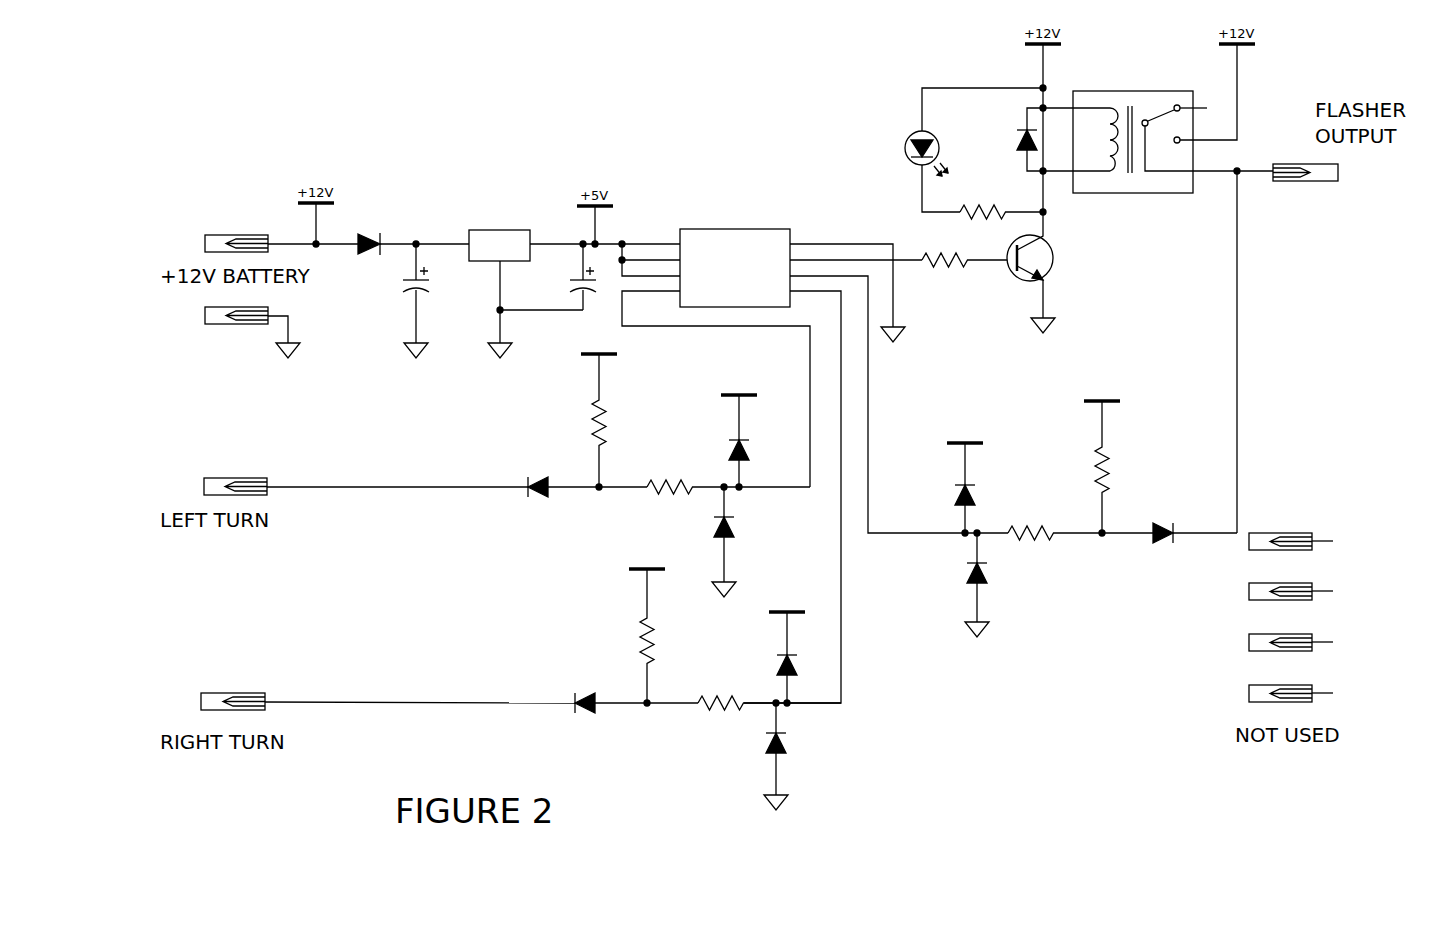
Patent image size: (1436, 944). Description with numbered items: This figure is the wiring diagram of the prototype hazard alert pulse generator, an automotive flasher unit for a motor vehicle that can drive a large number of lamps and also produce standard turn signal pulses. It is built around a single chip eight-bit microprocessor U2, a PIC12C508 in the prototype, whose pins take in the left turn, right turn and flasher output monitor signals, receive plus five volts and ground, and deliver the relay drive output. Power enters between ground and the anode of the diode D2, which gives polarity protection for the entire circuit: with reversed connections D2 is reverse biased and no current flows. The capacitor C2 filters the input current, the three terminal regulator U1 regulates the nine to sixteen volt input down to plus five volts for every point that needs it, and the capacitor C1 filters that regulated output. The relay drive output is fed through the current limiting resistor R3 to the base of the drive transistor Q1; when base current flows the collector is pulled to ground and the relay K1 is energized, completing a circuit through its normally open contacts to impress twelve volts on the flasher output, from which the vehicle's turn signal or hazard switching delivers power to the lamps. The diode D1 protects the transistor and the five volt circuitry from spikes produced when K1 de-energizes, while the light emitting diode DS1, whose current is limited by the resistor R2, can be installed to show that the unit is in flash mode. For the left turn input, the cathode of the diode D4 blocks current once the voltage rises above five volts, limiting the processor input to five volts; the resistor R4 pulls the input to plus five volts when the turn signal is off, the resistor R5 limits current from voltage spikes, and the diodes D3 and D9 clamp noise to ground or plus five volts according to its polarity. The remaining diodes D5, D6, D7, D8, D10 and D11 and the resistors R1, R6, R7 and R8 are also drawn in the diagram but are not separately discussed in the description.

The protection diode D1 is at (1004, 139).
The polarity protection diode D2 is at (408, 240).
The noise limiting diode D3 is at (762, 432).
The input blocking diode D4 is at (582, 488).
The diode 1N914 (output clamp to +5V) D5 is at (943, 480).
The diode 1N914 (left input clamp to ground) D6 is at (750, 542).
The diode 1N914 (output sense) D7 is at (1189, 531).
The diode 1N914 (output clamp to ground) D8 is at (952, 583).
The noise limiting diode D9 is at (810, 648).
The diode 1N914 (right turn input) D10 is at (630, 705).
The diode 1N914 (right input clamp to ground) D11 is at (801, 756).
The resistor 1K (LED current limit) R1 is at (1001, 212).
The LED current limiting resistor R2 is at (964, 259).
The base current limiting resistor R3 is at (610, 413).
The pull-up resistor R4 is at (728, 486).
The spike current limiting resistor R5 is at (1089, 459).
The resistor 47K (output series) R6 is at (1080, 531).
The resistor 47K (right pull-up) R7 is at (659, 628).
The resistor 47K (right series) R8 is at (769, 702).
The output filter capacitor C1 is at (548, 275).
The input filter capacitor C2 is at (432, 299).
The three terminal regulator U1 is at (562, 285).
The microcontroller PIC12C508 U2 is at (813, 457).
The transistor TIP122 Q1 is at (1051, 272).
The flasher relay K1 is at (1158, 118).
The LED indicator DS1 is at (964, 150).